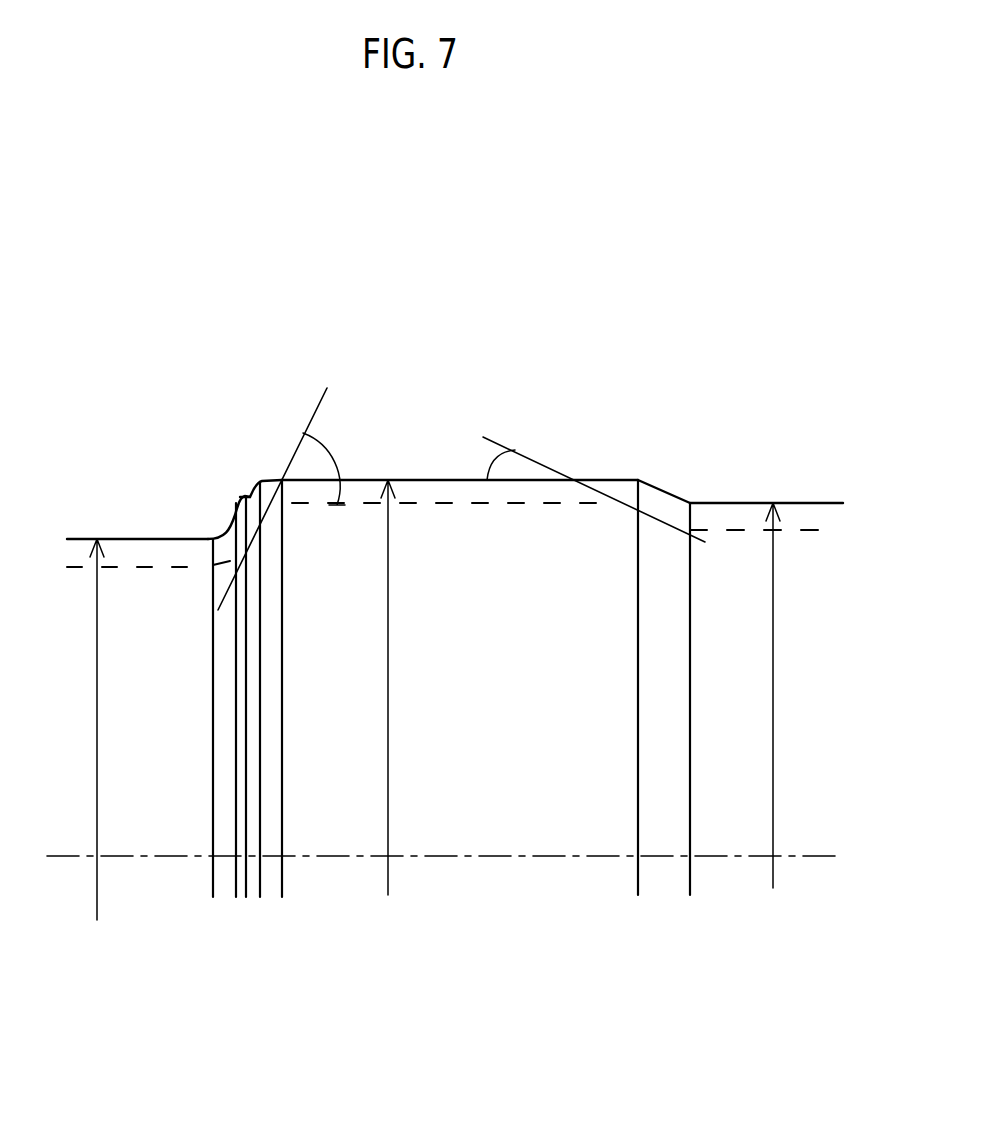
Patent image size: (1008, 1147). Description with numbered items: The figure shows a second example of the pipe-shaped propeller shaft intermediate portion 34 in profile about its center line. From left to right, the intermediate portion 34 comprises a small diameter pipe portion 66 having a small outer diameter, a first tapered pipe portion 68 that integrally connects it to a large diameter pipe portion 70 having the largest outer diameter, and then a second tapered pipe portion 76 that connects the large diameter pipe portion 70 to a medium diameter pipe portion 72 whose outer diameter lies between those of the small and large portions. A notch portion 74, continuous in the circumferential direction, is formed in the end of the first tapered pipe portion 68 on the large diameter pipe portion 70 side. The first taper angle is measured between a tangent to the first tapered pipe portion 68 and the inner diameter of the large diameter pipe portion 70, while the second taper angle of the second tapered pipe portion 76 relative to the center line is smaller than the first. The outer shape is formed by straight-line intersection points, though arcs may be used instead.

The propeller shaft intermediate portion 34 is at (468, 574).
The small diameter pipe portion 66 is at (125, 508).
The first tapered pipe portion 68 is at (245, 442).
The large diameter pipe portion 70 is at (420, 438).
The medium diameter pipe portion 72 is at (773, 485).
The notch portion 74 is at (252, 490).
The second tapered pipe portion 76 is at (667, 468).